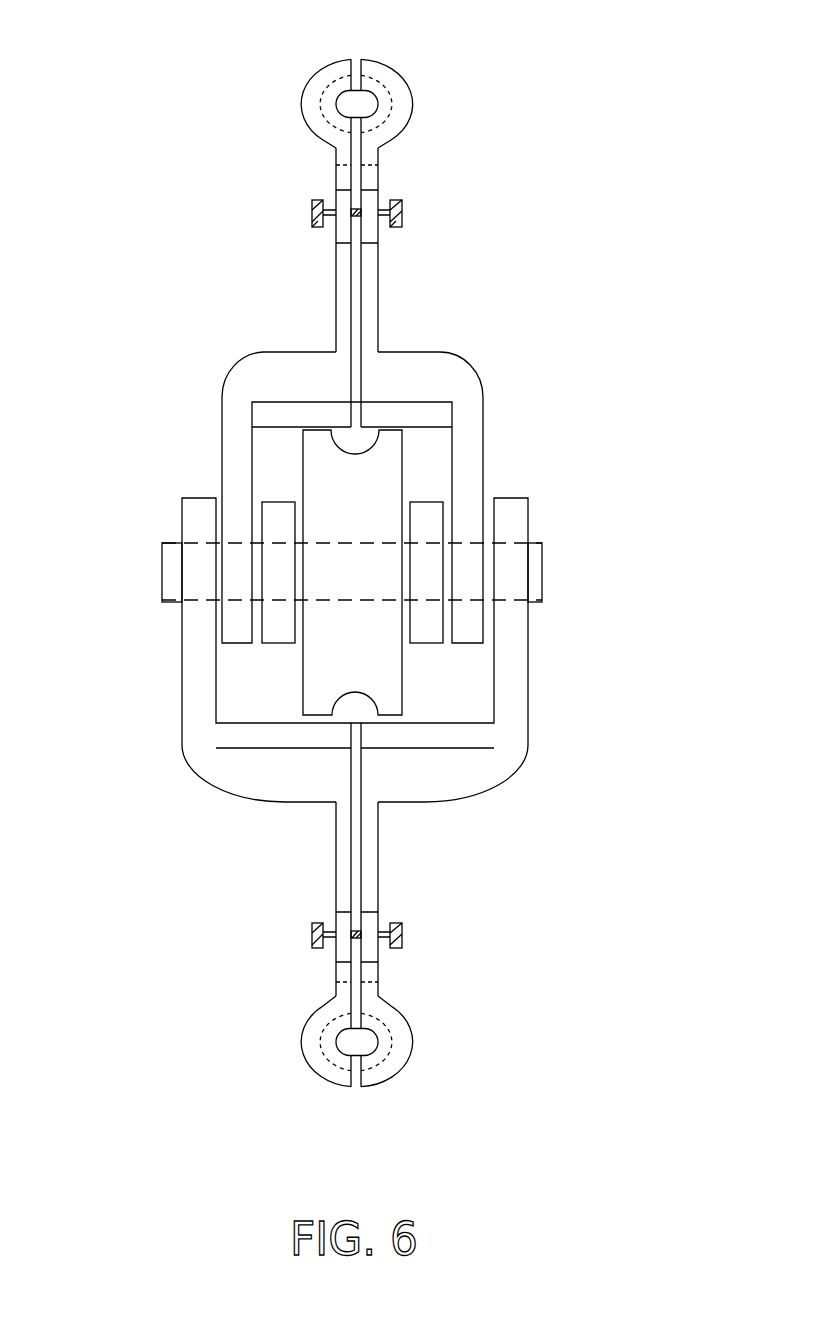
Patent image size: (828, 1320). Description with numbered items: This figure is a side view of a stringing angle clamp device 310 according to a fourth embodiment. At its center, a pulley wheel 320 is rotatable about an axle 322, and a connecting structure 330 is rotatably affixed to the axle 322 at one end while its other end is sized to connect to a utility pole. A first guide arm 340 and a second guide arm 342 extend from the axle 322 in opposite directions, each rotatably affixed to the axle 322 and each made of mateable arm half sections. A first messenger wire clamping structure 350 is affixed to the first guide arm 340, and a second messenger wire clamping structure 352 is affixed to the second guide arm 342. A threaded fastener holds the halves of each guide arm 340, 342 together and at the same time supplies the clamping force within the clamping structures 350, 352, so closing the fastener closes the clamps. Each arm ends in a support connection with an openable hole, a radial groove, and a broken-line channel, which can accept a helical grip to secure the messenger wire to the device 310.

The stringing angle clamp device 310 is at (621, 216).
The pulley wheel 320 is at (385, 490).
The axle 322 is at (545, 566).
The connecting structure 330 is at (280, 623).
The first guide arm 340 is at (378, 838).
The second guide arm 342 is at (378, 308).
The first messenger wire clamping structure 350 is at (416, 936).
The second messenger wire clamping structure 352 is at (405, 235).